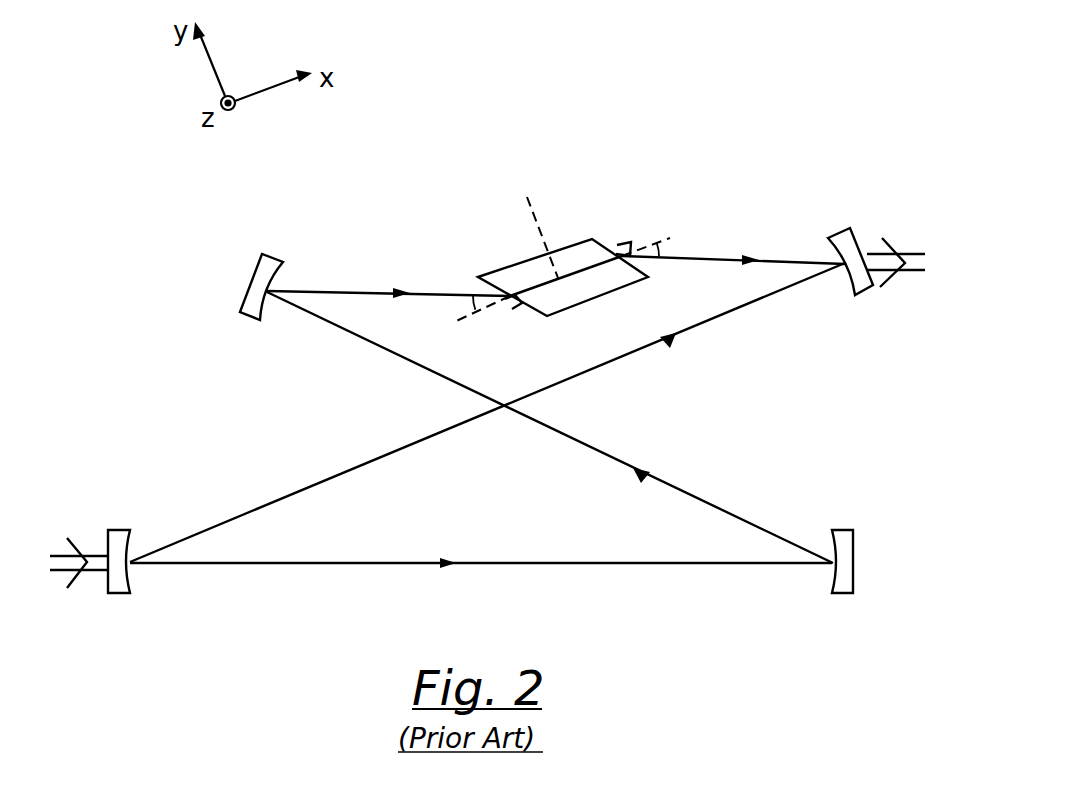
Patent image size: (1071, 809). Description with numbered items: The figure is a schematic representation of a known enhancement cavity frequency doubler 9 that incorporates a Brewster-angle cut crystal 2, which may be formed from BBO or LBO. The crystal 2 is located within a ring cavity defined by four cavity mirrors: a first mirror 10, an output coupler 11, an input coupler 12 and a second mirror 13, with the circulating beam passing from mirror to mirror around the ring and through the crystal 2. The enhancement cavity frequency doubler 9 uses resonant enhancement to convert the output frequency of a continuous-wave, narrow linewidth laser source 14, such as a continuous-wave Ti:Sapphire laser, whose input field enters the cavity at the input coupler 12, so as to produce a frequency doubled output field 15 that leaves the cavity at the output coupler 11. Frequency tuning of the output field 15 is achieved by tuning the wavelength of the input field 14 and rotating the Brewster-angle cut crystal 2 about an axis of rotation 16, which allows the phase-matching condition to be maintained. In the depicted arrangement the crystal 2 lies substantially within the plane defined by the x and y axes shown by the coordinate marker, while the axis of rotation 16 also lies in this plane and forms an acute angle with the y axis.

The Brewster-angle cut crystal 2 is at (580, 303).
The enhancement cavity frequency doubler 9 is at (822, 351).
The first mirror 10 is at (248, 316).
The output coupler 11 is at (840, 225).
The input coupler 12 is at (117, 595).
The second mirror 13 is at (840, 595).
The laser source 14 is at (67, 558).
The frequency doubled output field 15 is at (917, 248).
The axis of rotation 16 is at (530, 202).